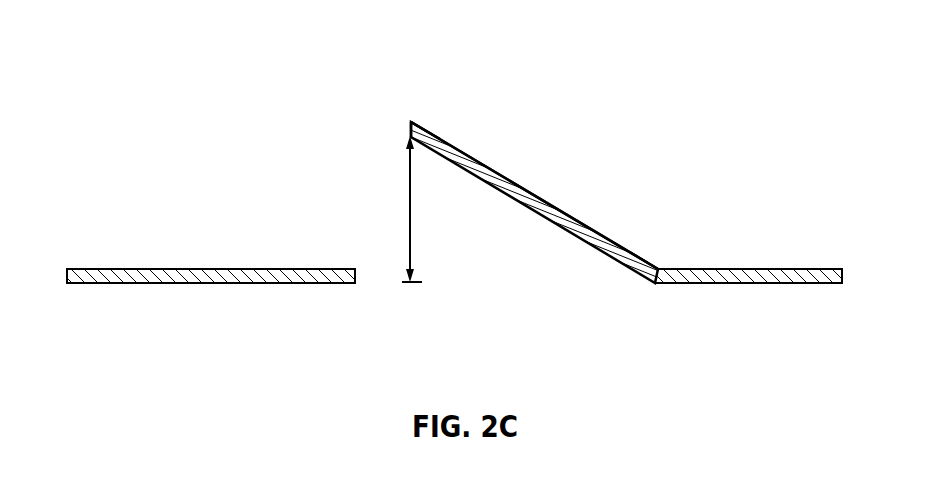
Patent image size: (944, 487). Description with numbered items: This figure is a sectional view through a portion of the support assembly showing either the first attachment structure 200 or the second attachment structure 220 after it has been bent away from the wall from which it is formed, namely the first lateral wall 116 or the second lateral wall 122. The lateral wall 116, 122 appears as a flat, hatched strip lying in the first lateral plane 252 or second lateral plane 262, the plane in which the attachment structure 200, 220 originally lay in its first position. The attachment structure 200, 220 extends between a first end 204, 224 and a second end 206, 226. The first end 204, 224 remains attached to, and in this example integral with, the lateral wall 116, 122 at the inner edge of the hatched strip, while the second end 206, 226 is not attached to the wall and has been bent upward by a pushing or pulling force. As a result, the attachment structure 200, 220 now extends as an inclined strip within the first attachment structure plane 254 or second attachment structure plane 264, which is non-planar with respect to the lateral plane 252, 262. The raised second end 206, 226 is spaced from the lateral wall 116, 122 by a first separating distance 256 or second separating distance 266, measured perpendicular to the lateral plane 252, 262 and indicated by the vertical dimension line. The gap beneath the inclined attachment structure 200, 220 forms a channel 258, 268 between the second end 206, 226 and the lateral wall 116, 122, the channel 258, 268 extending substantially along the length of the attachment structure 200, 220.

The first lateral wall 116 is at (475, 227).
The second lateral wall 122 is at (175, 269).
The first attachment structure 200 is at (537, 154).
The second attachment structure 220 is at (453, 146).
The first end 204 is at (659, 230).
The first end 224 is at (640, 258).
The second end 206 is at (386, 87).
The second end 226 is at (411, 122).
The first lateral plane 252 is at (187, 226).
The second lateral plane 262 is at (98, 269).
The first attachment structure plane 254 is at (534, 195).
The second attachment structure plane 264 is at (550, 155).
The first separating distance 256 is at (310, 190).
The second separating distance 266 is at (410, 167).
The channel 258 is at (308, 195).
The channel 268 is at (400, 216).